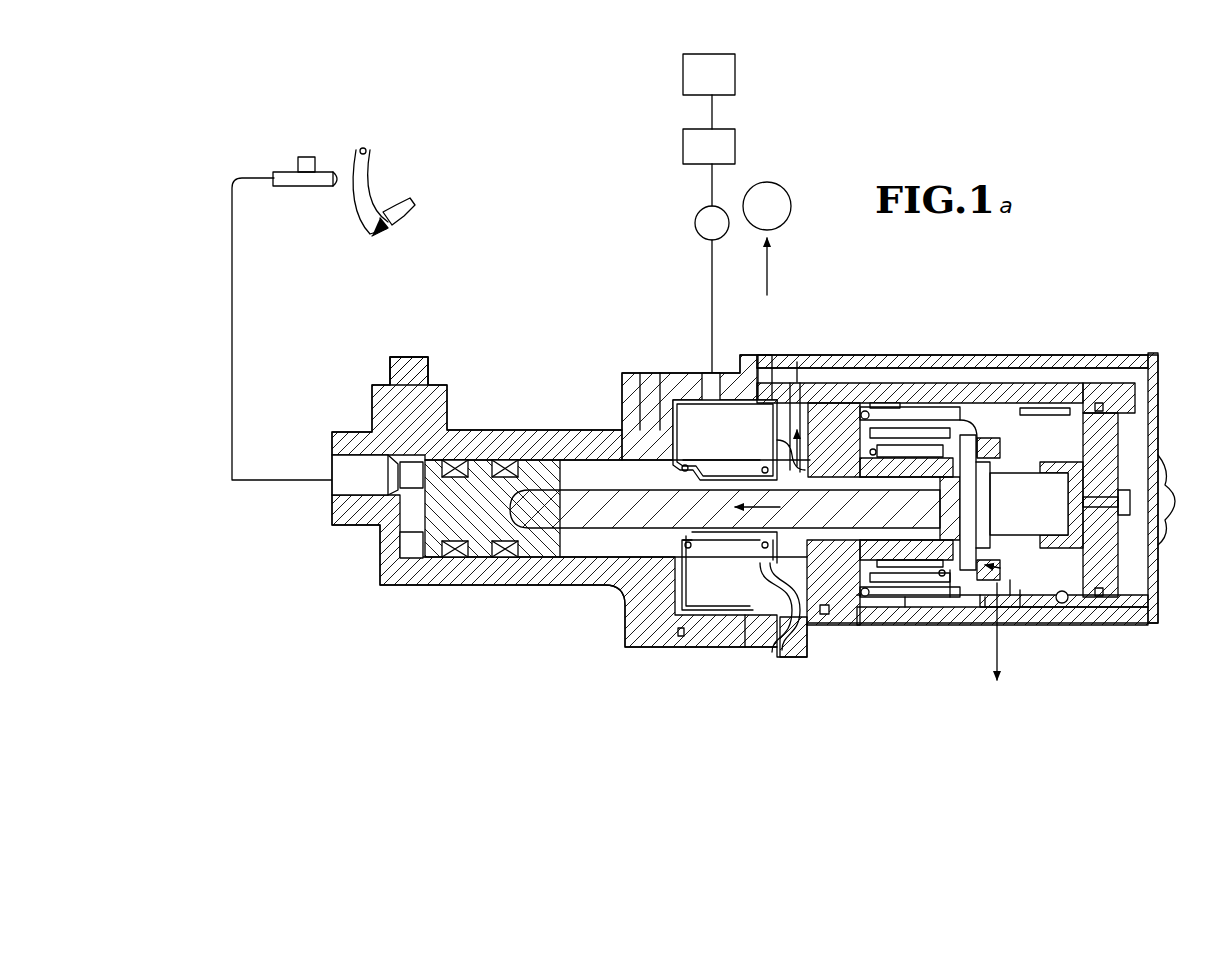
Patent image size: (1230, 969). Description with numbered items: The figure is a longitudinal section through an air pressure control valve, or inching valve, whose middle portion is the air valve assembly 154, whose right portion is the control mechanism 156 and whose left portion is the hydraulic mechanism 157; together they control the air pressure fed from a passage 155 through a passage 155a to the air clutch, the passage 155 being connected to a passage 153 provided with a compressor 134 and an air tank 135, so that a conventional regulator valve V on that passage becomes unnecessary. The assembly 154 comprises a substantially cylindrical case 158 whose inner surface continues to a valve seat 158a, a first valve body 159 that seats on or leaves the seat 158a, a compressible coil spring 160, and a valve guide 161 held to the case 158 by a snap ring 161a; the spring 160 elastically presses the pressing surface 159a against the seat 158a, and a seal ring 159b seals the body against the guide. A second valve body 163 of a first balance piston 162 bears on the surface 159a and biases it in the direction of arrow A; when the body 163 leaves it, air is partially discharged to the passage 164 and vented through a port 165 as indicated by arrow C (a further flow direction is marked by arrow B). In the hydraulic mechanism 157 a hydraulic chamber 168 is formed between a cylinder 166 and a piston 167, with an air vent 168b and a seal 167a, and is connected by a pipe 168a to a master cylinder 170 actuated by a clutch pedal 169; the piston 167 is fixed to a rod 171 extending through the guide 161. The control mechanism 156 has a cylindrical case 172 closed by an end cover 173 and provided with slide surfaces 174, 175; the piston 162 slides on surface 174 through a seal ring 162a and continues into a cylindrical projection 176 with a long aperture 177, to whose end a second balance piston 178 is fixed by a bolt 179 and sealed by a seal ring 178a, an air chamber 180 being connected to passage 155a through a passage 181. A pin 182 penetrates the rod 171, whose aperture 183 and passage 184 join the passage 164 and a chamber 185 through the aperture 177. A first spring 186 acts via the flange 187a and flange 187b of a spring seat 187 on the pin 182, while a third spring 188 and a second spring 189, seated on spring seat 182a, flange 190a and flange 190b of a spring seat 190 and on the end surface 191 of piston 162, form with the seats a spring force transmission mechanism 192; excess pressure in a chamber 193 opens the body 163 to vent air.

The compressor 134 is at (683, 76).
The air tank 135 is at (683, 146).
The regulator valve V is at (695, 226).
The passage 153 is at (714, 262).
The air valve assembly 154 is at (754, 543).
The passage 155 is at (705, 373).
The passage 155a is at (768, 352).
The control mechanism 156 is at (985, 549).
The hydraulic mechanism 157 is at (539, 557).
The case 158 is at (685, 640).
The valve seat 158a is at (745, 650).
The first valve body 159 is at (690, 620).
The pressing surface 159a is at (780, 615).
The cylinder wall 159b is at (640, 400).
The compressible coil spring 160 is at (710, 618).
The valve guide 161 is at (650, 380).
The snap ring 161a is at (668, 390).
The first balance piston 162 is at (893, 430).
The seal ring 162a is at (790, 600).
The second valve body 163 is at (800, 450).
The passage 164 is at (820, 488).
The port 165 is at (985, 612).
The cylinder 166 is at (540, 580).
The piston 167 is at (455, 560).
The seal 167a is at (505, 560).
The hydraulic chamber 168 is at (410, 548).
The pipe 168a is at (232, 390).
The air vent 168b is at (415, 355).
The clutch pedal 169 is at (392, 234).
The master cylinder 170 is at (303, 157).
The rod 171 is at (600, 530).
The case 172 is at (905, 602).
The end cover 173 is at (1150, 572).
The slide surface 174 is at (872, 400).
The slide surface 175 is at (1150, 612).
The cylindrical projection 176 is at (1025, 462).
The long aperture 177 is at (1070, 625).
The second balance piston 178 is at (1120, 440).
The seal ring 178a is at (1110, 415).
The bolt 179 is at (1135, 500).
The air chamber 180 is at (1170, 518).
The passage 181 is at (855, 375).
The pin 182 is at (950, 592).
The spring seat 182a is at (975, 440).
The aperture 183 is at (885, 490).
The passage 184 is at (995, 497).
The chamber 185 is at (1010, 592).
The first spring 186 is at (1062, 605).
The spring seat 187 is at (1010, 430).
The flange 187a is at (915, 430).
The flange 187b is at (1060, 410).
The third spring 188 is at (890, 592).
The second spring 189 is at (870, 590).
The spring seat 190 is at (935, 445).
The flange 190a is at (835, 612).
The flange 190b is at (935, 592).
The end surface 191 is at (835, 600).
The spring force transmission mechanism 192 is at (1020, 602).
The chamber 193 is at (760, 590).
The arrow A is at (766, 510).
The direction B is at (797, 362).
The arrow C is at (994, 636).